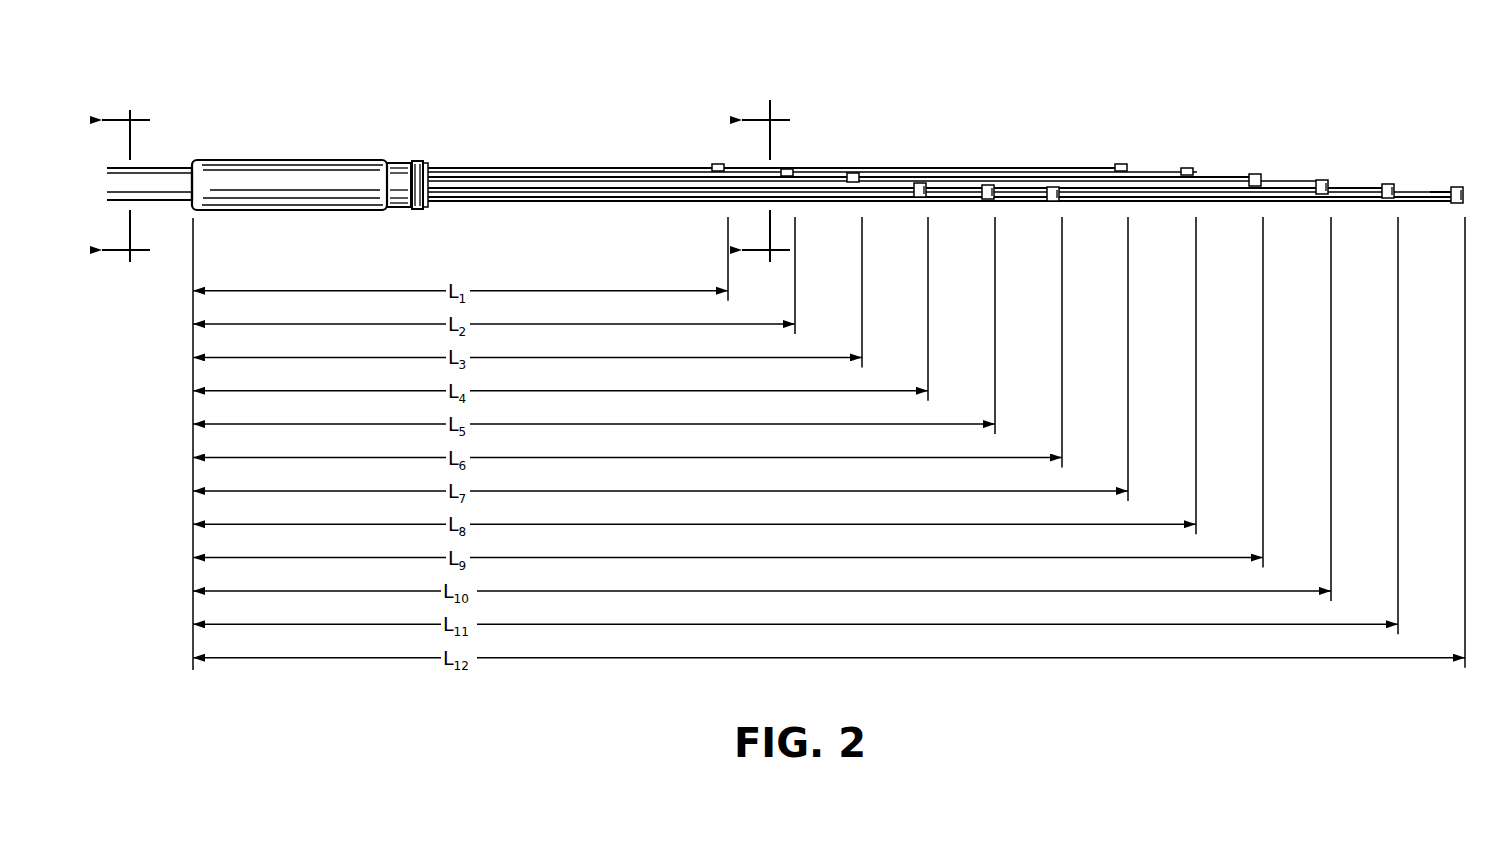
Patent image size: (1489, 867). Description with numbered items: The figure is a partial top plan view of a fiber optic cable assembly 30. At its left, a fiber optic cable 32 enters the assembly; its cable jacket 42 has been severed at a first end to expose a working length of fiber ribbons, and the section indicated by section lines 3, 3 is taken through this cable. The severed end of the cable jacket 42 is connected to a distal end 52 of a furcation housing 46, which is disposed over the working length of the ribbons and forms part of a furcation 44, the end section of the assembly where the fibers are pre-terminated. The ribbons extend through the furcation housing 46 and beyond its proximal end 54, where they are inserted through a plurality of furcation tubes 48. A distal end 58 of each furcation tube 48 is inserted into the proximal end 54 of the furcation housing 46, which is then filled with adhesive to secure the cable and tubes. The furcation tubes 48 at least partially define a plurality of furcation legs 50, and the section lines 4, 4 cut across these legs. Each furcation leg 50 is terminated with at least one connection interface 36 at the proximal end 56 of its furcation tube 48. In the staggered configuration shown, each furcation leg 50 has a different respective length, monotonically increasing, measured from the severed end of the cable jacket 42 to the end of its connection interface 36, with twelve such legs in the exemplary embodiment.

The fiber optic cable assembly 30 is at (983, 34).
The fiber optic cable 32 is at (149, 183).
The cable jacket 42 is at (170, 202).
The distal end of the furcation housing 52 is at (192, 160).
The furcation housing 46 is at (288, 162).
The proximal end of the furcation housing 54 is at (432, 182).
The distal end of the furcation tube 58 is at (430, 206).
The furcation 44 is at (950, 159).
The furcation tubes 48 is at (545, 178).
The furcation legs 50 is at (912, 165).
The proximal end of the furcation tube 56 is at (710, 166).
The connection interfaces 36 is at (717, 164).
The section line 3- 3 is at (126, 187).
The section line 4- 4 is at (766, 187).